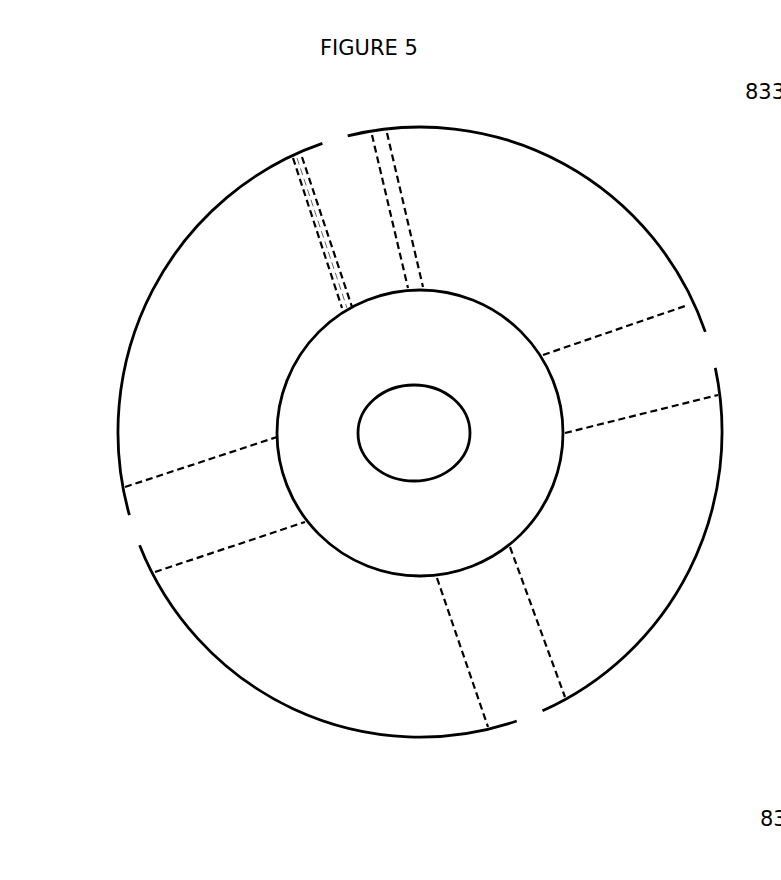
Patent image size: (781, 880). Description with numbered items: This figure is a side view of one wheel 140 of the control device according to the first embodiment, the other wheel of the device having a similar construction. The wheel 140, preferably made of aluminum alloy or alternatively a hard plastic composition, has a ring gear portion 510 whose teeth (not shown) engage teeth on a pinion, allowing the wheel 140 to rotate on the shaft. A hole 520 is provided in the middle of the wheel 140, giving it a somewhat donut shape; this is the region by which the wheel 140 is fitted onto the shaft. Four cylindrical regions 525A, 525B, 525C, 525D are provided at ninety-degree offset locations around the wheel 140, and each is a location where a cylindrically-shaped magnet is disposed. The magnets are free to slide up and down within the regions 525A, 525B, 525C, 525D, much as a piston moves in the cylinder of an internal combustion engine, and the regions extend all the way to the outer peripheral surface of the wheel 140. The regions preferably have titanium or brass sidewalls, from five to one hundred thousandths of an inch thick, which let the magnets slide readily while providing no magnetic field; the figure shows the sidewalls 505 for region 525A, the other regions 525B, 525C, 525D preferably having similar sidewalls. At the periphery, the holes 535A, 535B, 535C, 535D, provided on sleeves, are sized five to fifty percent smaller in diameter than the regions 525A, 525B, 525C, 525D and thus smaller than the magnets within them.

The wheel 140 is at (149, 270).
The ring gear portion 510 is at (500, 321).
The hole 520 is at (391, 409).
The sidewalls 505 is at (348, 269).
The cylindrical region 525A is at (388, 217).
The cylindrical region 525B is at (222, 530).
The cylindrical region 525C is at (532, 620).
The cylindrical region 525D is at (631, 401).
The hole 535A is at (348, 126).
The hole 535B is at (128, 545).
The hole 535C is at (535, 730).
The hole 535D is at (718, 333).